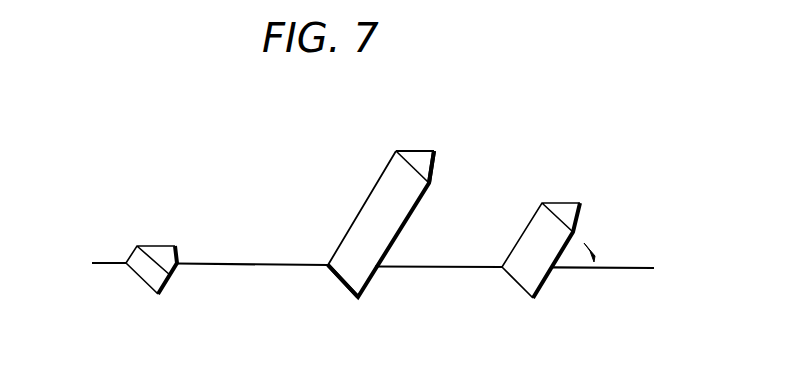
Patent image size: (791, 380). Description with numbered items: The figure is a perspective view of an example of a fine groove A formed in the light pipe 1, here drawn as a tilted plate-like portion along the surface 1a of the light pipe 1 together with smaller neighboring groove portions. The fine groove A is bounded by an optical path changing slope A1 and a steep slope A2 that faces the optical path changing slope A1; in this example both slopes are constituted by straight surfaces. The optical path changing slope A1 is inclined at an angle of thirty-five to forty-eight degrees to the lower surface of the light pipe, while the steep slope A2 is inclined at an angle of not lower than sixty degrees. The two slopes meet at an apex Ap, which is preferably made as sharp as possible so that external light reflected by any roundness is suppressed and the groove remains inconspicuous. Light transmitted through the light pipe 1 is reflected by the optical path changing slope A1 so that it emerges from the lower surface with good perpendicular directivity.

The light pipe 1 is at (594, 262).
The upper surface of light pipe 1a is at (633, 267).
The fine groove A is at (405, 251).
The optical path changing slope A1 is at (393, 157).
The steep slope A2 is at (436, 158).
The apex Ap is at (372, 277).